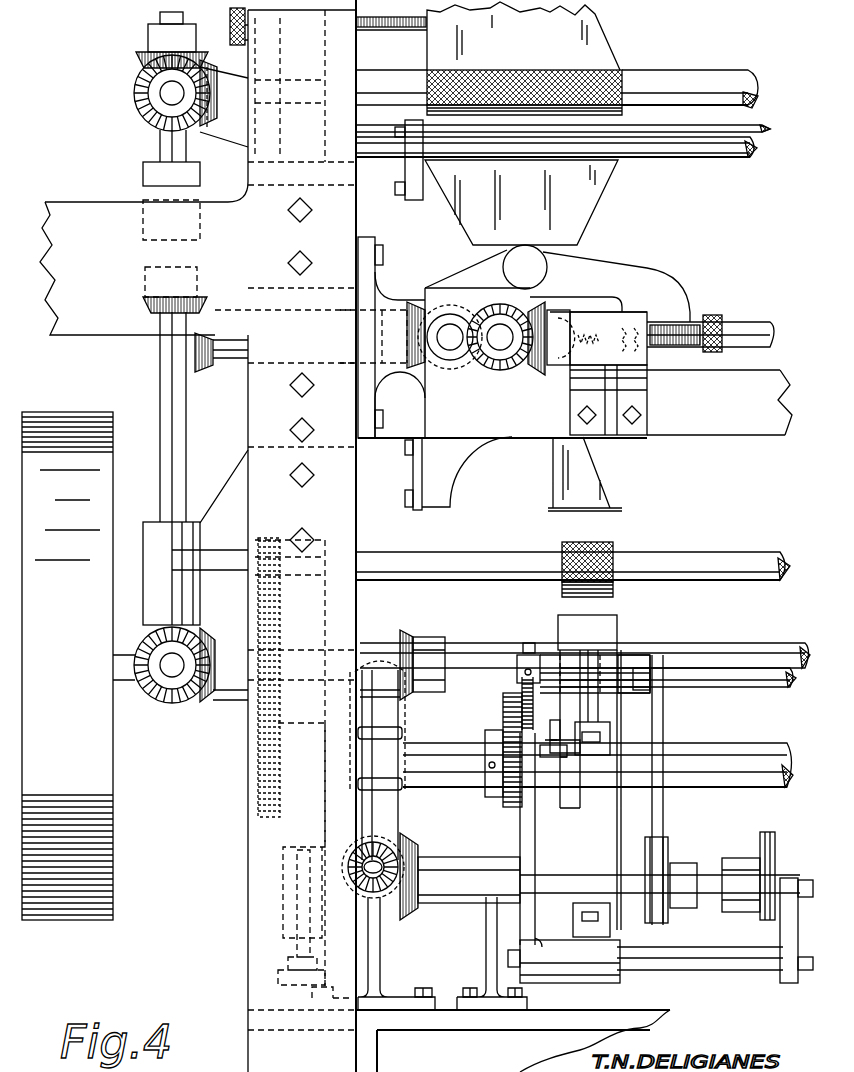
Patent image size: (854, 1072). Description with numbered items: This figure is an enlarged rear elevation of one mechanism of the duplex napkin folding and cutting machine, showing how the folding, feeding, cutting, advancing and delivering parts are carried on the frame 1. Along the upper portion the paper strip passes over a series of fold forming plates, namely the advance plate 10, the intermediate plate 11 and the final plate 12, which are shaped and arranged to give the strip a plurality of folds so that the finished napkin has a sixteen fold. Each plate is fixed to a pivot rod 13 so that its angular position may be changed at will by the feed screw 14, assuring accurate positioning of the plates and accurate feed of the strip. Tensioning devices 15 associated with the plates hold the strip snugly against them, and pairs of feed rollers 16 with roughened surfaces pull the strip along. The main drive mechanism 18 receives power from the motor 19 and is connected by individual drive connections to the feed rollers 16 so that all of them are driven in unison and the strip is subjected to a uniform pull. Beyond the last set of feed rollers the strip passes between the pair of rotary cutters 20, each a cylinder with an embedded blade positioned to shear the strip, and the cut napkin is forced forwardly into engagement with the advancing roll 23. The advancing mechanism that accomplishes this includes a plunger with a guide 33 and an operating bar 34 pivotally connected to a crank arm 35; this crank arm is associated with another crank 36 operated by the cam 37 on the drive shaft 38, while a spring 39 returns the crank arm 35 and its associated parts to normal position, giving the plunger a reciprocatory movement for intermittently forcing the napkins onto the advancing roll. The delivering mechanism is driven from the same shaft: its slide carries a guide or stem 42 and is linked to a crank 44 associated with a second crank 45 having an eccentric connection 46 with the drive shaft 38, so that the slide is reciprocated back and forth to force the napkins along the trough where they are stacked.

The frame 1 is at (265, 925).
The advance plate 10 is at (590, 40).
The intermediate plate 11 is at (578, 205).
The final plate 12 is at (590, 480).
The pivot rod 13 is at (692, 148).
The feed screw 14 is at (375, 28).
The tensioning devices 15 is at (760, 126).
The feed rollers 16 is at (668, 90).
The main drive mechanism 18 is at (122, 668).
The motor 19 is at (236, 62).
The rotary cutters 20 is at (565, 635).
The advancing roll 23 is at (572, 806).
The guide 33 is at (590, 735).
The operating link or bar 34 is at (567, 757).
The crank arm 35 is at (520, 848).
The crank 36 is at (790, 925).
The cam 37 is at (768, 865).
The drive shaft 38 is at (700, 880).
The spring 39 is at (505, 700).
The guide or stem 42 is at (598, 918).
The crank 44 is at (525, 665).
The second crank 45 is at (650, 665).
The eccentric connection 46 is at (662, 840).